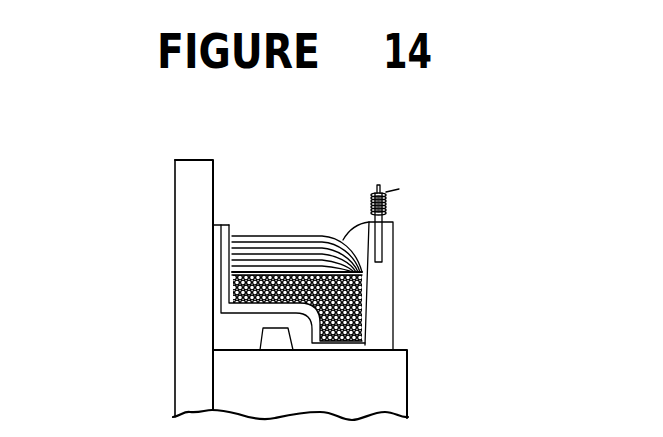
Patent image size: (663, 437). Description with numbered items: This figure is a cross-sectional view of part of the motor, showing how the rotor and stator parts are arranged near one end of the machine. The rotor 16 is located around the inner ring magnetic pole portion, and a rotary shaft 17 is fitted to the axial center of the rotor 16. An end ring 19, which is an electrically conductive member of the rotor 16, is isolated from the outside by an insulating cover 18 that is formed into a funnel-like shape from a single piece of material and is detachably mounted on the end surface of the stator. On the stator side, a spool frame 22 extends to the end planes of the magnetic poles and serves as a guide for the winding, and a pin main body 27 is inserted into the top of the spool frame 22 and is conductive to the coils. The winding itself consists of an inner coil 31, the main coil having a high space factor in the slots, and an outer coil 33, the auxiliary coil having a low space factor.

The rotor 16 is at (360, 387).
The rotary shaft 17 is at (190, 208).
The insulating cover 18 is at (236, 234).
The end ring 19 is at (272, 340).
The spool frame 22 is at (395, 270).
The pin main body 27 is at (380, 190).
The inner coil 31 is at (353, 322).
The outer coil 33 is at (313, 240).